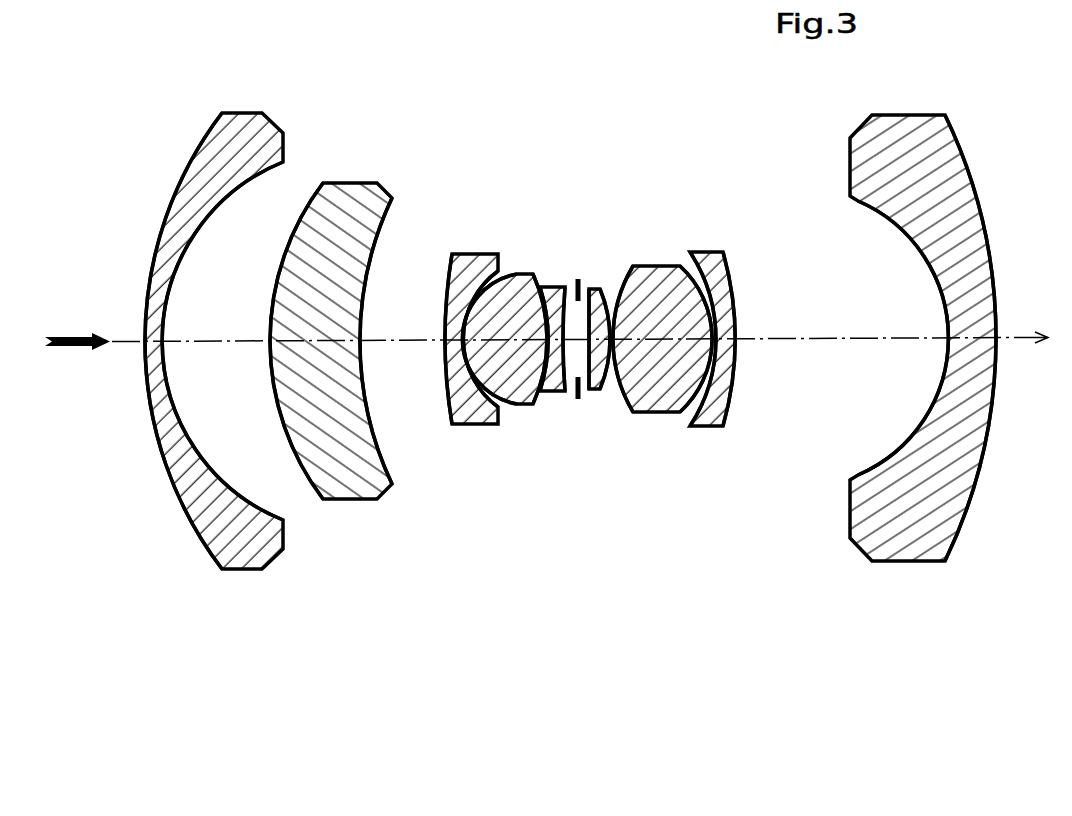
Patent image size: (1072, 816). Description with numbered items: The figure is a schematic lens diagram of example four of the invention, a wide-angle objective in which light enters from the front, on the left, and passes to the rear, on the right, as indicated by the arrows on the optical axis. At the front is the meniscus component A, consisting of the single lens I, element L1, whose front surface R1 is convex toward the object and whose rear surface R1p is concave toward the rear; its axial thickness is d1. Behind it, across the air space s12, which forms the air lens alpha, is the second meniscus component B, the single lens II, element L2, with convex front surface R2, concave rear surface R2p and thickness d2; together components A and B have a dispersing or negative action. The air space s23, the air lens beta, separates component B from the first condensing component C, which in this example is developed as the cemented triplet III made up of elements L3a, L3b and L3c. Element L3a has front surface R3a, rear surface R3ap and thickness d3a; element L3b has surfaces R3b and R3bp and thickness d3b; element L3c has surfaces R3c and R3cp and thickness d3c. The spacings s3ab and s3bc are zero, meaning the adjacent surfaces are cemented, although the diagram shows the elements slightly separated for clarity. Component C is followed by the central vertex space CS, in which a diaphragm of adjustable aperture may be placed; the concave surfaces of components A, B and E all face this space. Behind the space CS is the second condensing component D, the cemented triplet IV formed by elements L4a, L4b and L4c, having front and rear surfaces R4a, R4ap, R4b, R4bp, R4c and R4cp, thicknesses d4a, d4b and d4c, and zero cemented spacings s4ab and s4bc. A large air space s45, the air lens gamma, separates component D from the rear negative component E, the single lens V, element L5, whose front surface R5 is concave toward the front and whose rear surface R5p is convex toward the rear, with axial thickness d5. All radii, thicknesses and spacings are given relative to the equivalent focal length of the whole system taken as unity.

The first lens element L1 is at (244, 542).
The front surface radius of first lens element R1 is at (192, 160).
The rear surface radius of first lens element R1p is at (282, 170).
The axial thickness of first lens element d1 is at (147, 341).
The first lens I is at (250, 673).
The first meniscus component A is at (243, 683).
The second lens element L2 is at (354, 482).
The front surface radius of second lens element R2 is at (311, 200).
The rear surface radius of second lens element R2p is at (392, 216).
The axial thickness of second lens element d2 is at (360, 341).
The second lens II is at (364, 613).
The second meniscus component B is at (354, 623).
The spacing between first and second elements s12 is at (228, 345).
The air lens alpha is at (268, 341).
The first element of third lens group L3a is at (477, 420).
The front surface radius of element L3a R3a is at (452, 258).
The rear surface radius of element L3a R3ap is at (496, 270).
The axial thickness of element L3a d3a is at (444, 339).
The second element of third lens group L3b is at (511, 402).
The front surface radius of element L3b R3b is at (514, 275).
The rear surface radius of element L3b R3bp is at (532, 276).
The axial thickness of element L3b d3b is at (547, 339).
The third element of third lens group L3c is at (568, 394).
The front surface radius of element L3c R3c is at (541, 288).
The rear surface radius of element L3c R3cp is at (566, 288).
The axial thickness of element L3c d3c is at (566, 298).
The spacing between elements L3a and L3b s3ab is at (458, 343).
The spacing between elements L3b and L3c s3bc is at (538, 402).
The spacing between second and third elements s23 is at (372, 341).
The air lens beta is at (445, 339).
The third lens group III is at (520, 590).
The first condensing component C is at (508, 612).
The central vertex space CS is at (578, 401).
The first element of fourth lens group L4a is at (613, 392).
The front surface radius of element L4a R4a is at (593, 290).
The rear surface radius of element L4a R4ap is at (636, 270).
The axial thickness of element L4a d4a is at (601, 290).
The second element of fourth lens group L4b is at (676, 404).
The front surface radius of element L4b R4b is at (672, 268).
The rear surface radius of element L4b R4bp is at (688, 284).
The axial thickness of element L4b d4b is at (712, 339).
The third element of fourth lens group L4c is at (717, 420).
The front surface radius of element L4c R4c is at (690, 255).
The rear surface radius of element L4c R4cp is at (724, 262).
The axial thickness of element L4c d4c is at (720, 317).
The spacing between elements L4a and L4b s4ab is at (626, 400).
The spacing between elements L4b and L4c s4bc is at (712, 351).
The fourth lens group IV is at (703, 580).
The second condensing component D is at (686, 608).
The air lens gamma is at (947, 338).
The spacing between fourth and fifth elements s45 is at (851, 341).
The fifth lens element L5 is at (908, 542).
The front surface radius of fifth lens element R5 is at (860, 203).
The rear surface radius of fifth lens element R5p is at (1001, 134).
The axial thickness of fifth lens element d5 is at (997, 338).
The fifth lens V is at (918, 650).
The rear negative component E is at (909, 674).